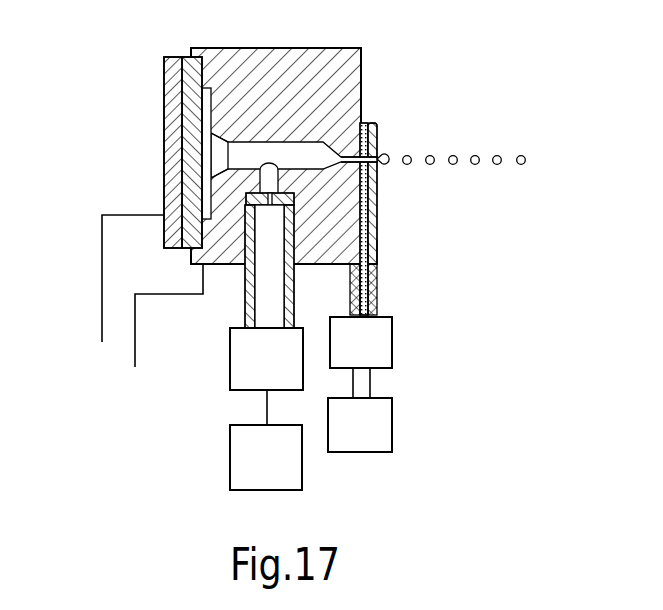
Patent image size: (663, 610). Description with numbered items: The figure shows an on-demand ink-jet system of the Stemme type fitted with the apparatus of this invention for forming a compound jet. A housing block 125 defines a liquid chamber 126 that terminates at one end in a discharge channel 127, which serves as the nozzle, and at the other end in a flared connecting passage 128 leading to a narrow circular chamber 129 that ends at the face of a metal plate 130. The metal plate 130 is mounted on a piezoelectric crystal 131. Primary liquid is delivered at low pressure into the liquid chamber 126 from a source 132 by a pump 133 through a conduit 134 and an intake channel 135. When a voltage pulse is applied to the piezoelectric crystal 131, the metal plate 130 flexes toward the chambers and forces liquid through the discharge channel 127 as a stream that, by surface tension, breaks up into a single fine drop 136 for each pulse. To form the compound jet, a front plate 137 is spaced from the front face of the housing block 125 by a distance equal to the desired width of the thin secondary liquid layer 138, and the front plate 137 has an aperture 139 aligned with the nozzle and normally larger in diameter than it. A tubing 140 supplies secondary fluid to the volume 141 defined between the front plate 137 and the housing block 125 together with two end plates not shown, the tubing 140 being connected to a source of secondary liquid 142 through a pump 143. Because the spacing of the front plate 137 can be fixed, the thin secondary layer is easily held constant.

The housing block 125 is at (292, 65).
The liquid chamber 126 is at (285, 148).
The discharge channel 127 is at (366, 121).
The flared connecting passage 128 is at (218, 155).
The narrow circular chamber 129 is at (207, 124).
The metal plate 130 is at (192, 86).
The piezoelectric crystal 131 is at (163, 65).
The source 132 is at (283, 475).
The pump 133 is at (283, 372).
The conduit 134 is at (246, 298).
The intake channel 135 is at (272, 206).
The fine drop 136 is at (497, 155).
The front plate 137 is at (378, 195).
The secondary liquid layer 138 is at (376, 123).
The aperture 139 is at (380, 150).
The tubing 140 is at (376, 295).
The volume 141 is at (376, 257).
The source of secondary liquid 142 is at (378, 438).
The pump 143 is at (378, 357).